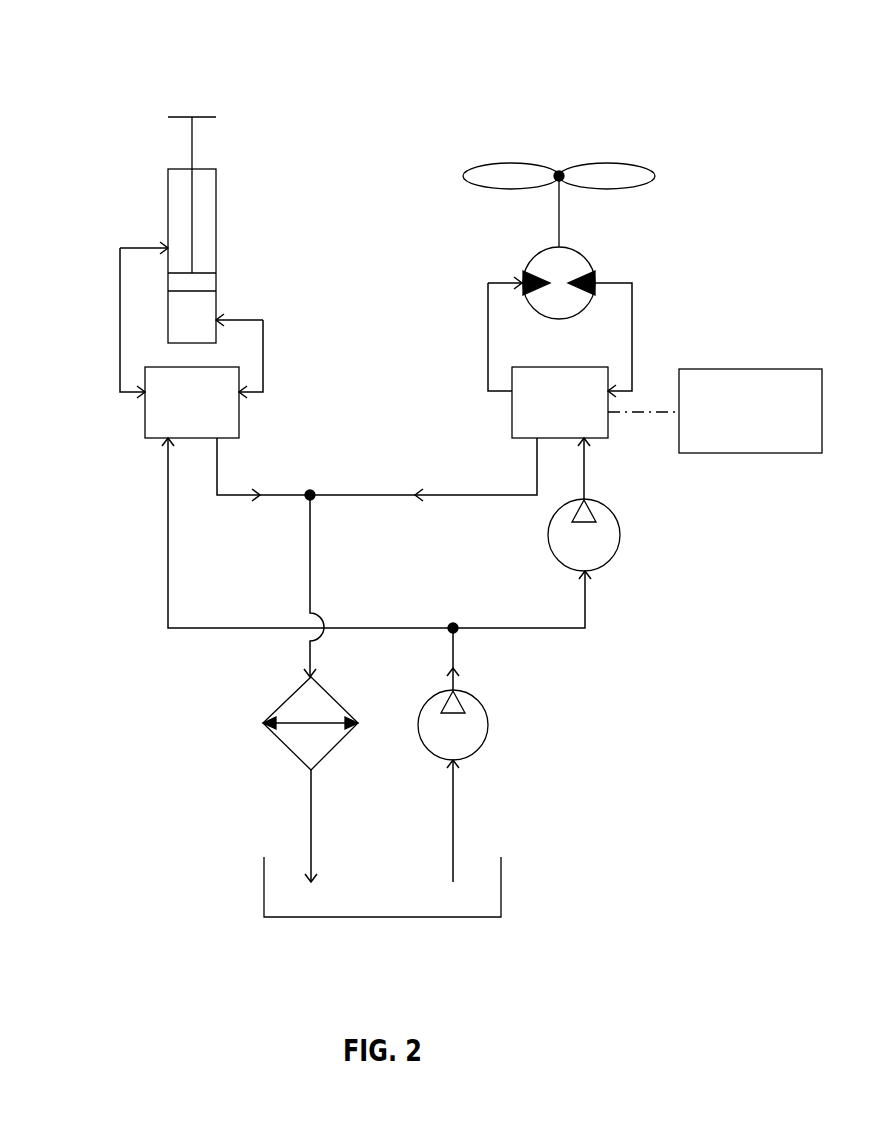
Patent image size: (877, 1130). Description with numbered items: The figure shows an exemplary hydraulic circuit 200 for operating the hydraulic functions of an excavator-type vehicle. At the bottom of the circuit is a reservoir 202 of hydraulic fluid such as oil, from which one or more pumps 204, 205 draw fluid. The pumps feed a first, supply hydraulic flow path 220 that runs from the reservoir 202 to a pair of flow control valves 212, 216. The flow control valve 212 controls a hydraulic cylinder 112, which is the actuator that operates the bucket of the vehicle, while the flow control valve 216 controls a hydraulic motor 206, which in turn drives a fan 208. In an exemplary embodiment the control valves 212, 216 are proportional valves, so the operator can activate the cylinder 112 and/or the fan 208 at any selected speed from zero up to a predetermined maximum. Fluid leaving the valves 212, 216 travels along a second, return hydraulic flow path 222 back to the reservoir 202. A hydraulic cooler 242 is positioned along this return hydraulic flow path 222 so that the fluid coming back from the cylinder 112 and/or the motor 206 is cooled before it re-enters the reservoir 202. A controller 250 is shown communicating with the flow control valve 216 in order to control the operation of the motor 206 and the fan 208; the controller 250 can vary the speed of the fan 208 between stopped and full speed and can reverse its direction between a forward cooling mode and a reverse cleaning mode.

The hydraulic circuit 200 is at (118, 104).
The hydraulic cylinder 112 is at (216, 208).
The flow control valve 212 is at (209, 415).
The flow control valve 216 is at (577, 415).
The controller 250 is at (767, 427).
The fan 208 is at (487, 165).
The hydraulic motor 206 is at (546, 252).
The pump 205 is at (620, 533).
The pump 204 is at (488, 725).
The return hydraulic flow path 222 is at (310, 537).
The supply hydraulic flow path 220 is at (455, 648).
The hydraulic cooler 242 is at (288, 745).
The reservoir 202 is at (430, 917).